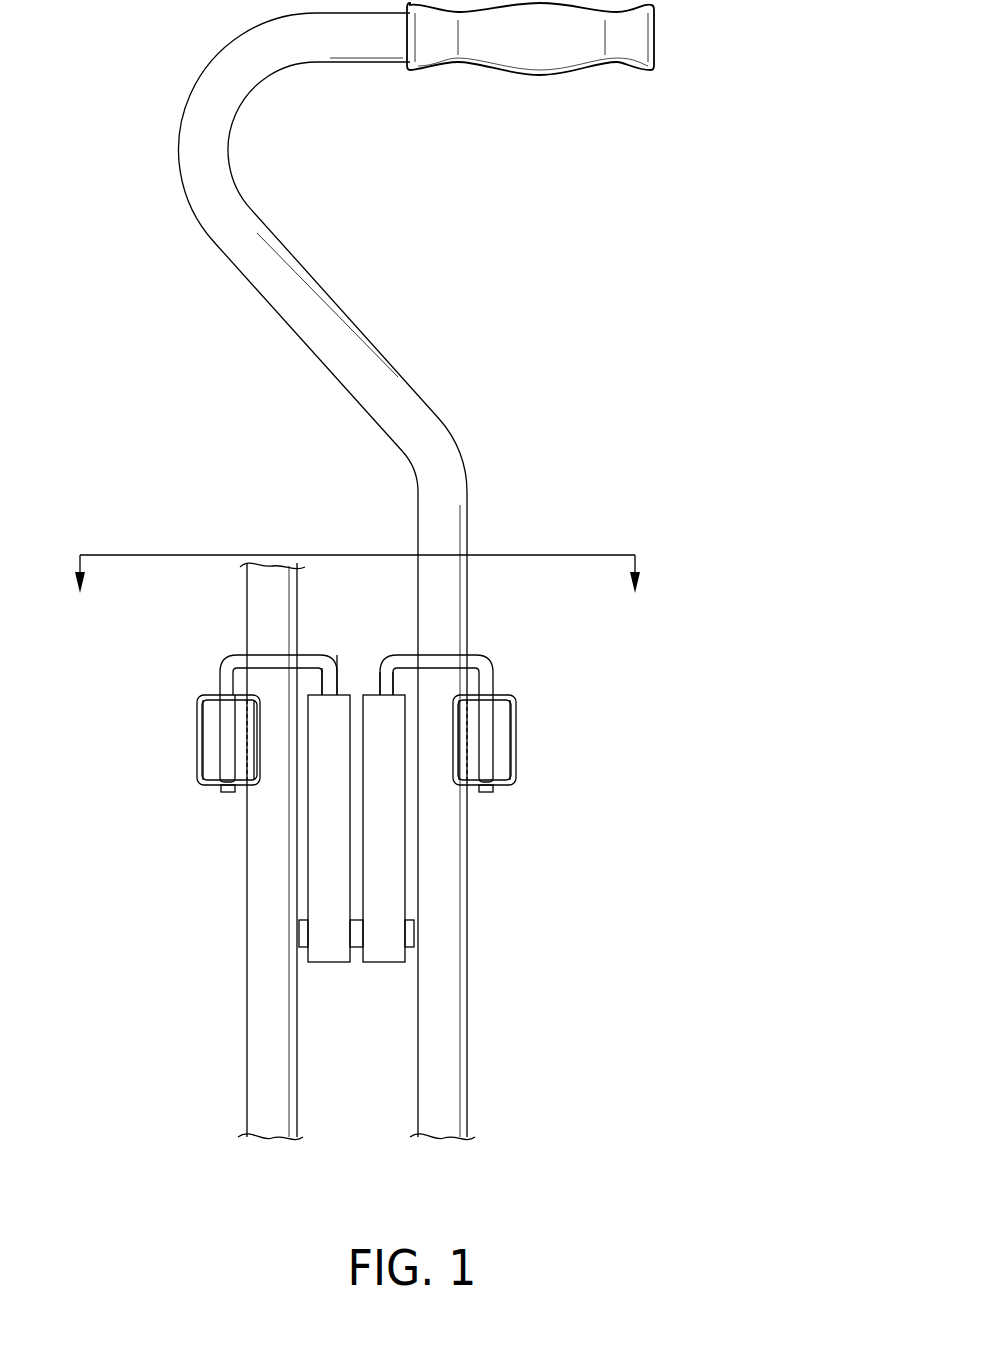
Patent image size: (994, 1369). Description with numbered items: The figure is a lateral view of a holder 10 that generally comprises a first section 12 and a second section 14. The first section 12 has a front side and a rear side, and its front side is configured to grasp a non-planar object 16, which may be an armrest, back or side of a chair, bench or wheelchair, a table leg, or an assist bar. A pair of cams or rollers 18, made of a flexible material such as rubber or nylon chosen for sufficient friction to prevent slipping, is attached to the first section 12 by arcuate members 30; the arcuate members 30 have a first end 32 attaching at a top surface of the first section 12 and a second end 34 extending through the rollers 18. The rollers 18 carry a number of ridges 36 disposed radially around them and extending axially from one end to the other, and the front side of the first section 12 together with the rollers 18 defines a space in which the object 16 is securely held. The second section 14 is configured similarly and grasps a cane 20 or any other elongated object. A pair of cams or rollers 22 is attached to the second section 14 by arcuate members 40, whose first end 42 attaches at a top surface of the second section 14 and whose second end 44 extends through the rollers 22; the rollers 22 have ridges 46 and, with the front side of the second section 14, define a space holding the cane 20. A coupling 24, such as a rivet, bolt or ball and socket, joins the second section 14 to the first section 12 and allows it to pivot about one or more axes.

The holder 10 is at (362, 571).
The first section 12 is at (317, 952).
The second section 14 is at (395, 887).
The non-planar object 16 is at (258, 1093).
The cams (or rollers) 18 is at (180, 777).
The cane 20 is at (453, 1092).
The cams (or rollers) 22 is at (526, 778).
The coupling 24 is at (358, 947).
The arcuate members 30 is at (276, 639).
The first end 32 is at (338, 693).
The second end 34 is at (227, 793).
The ridges 36 is at (200, 713).
The arcuate members 40 is at (465, 653).
The first end 42 is at (368, 693).
The second end 44 is at (485, 792).
The ridges 46 is at (493, 750).